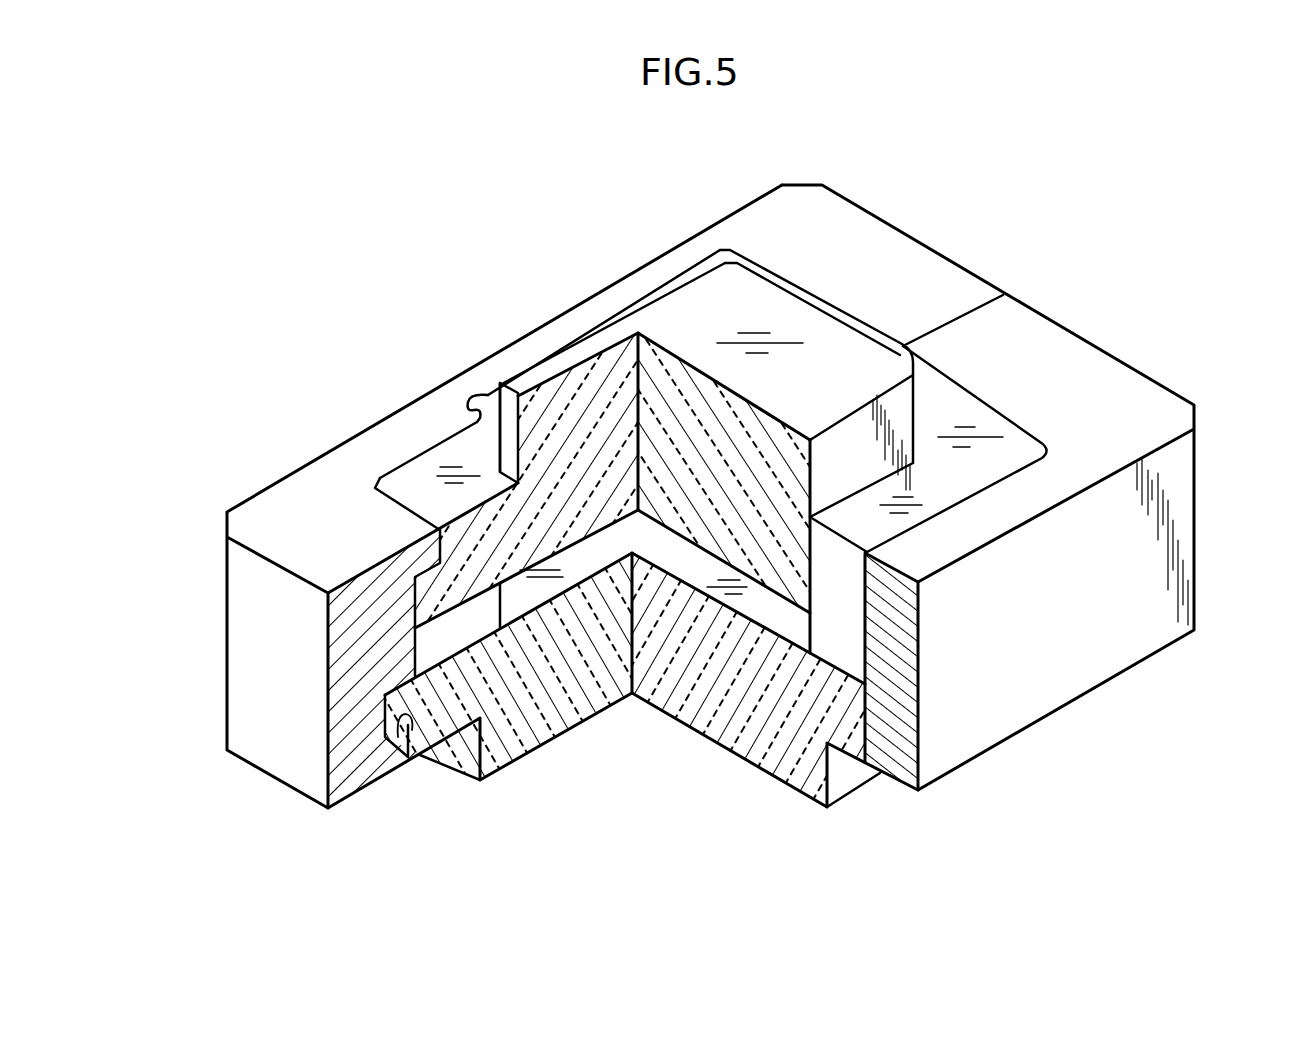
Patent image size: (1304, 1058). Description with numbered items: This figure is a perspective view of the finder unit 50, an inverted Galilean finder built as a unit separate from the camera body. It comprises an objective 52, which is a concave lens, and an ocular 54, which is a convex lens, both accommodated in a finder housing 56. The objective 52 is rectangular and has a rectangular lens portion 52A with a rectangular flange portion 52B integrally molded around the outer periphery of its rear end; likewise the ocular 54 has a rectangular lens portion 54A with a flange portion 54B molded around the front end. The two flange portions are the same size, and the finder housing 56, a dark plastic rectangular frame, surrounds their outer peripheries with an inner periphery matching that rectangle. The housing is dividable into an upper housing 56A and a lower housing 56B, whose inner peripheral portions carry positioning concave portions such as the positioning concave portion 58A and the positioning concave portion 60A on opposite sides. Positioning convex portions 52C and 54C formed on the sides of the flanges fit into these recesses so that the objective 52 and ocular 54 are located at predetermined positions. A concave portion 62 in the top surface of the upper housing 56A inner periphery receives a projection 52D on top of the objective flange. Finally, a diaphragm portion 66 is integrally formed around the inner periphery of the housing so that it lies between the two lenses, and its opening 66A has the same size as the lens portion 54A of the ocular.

The finder unit 50 is at (300, 290).
The objective 52 is at (832, 290).
The lens portion 52A is at (690, 322).
The flange portion 52B is at (470, 525).
The positioning convex portion 52C is at (413, 620).
The projection 52D is at (482, 405).
The ocular 54 is at (800, 825).
The lens portion 54A is at (548, 733).
The flange portion 54B is at (440, 725).
The positioning convex portion 54C is at (395, 735).
The finder housing 56 is at (1167, 185).
The upper housing 56A is at (923, 302).
The lower housing 56B is at (1098, 383).
The positioning concave portion 58A is at (437, 590).
The positioning concave portion 60A is at (404, 742).
The concave portion 62 is at (470, 400).
The diaphragm portion 66 is at (835, 645).
The opening 66A is at (808, 628).